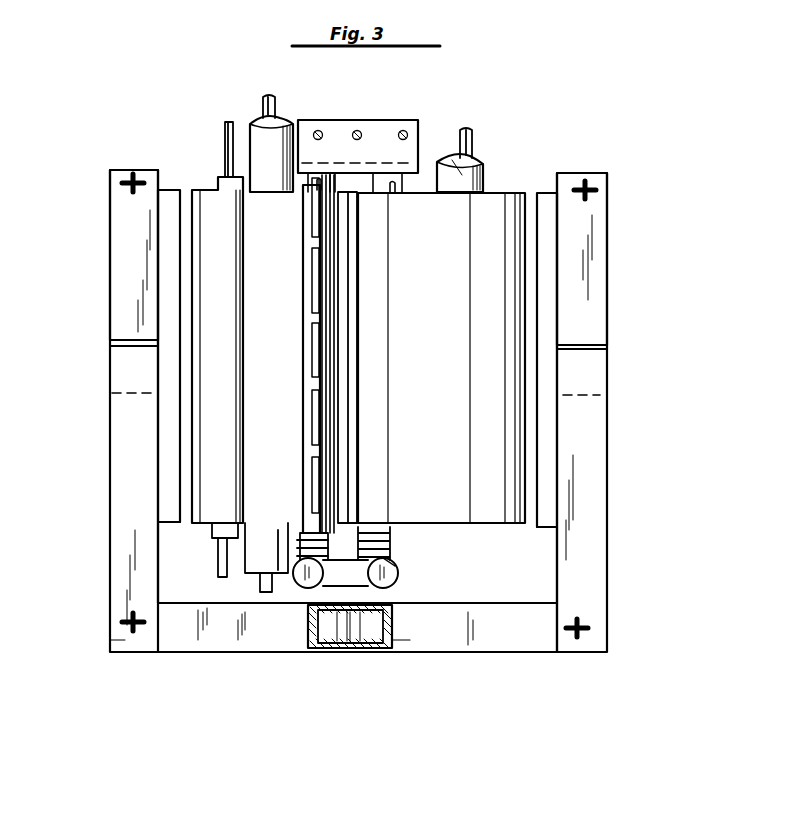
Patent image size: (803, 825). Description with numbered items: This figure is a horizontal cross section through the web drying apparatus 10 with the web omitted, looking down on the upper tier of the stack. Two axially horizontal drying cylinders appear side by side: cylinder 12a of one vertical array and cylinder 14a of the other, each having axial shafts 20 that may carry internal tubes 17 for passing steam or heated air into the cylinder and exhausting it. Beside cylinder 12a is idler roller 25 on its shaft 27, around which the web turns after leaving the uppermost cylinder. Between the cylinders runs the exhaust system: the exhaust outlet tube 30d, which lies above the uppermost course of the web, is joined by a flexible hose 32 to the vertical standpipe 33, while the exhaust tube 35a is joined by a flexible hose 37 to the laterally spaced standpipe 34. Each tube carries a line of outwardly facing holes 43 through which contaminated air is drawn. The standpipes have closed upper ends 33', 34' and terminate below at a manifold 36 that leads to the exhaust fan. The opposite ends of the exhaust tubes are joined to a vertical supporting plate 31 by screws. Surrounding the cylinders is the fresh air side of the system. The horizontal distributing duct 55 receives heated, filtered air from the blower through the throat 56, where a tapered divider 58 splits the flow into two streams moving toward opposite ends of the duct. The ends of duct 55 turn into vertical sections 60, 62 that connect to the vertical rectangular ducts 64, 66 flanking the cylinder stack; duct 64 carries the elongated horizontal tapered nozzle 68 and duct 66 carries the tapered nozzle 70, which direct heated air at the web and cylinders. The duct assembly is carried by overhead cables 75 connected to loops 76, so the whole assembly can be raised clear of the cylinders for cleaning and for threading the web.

The web drying apparatus 10 is at (293, 702).
The cylinder 12a is at (203, 518).
The cylinder 14a is at (505, 210).
The internal tube 17 is at (270, 110).
The axial shaft 20 is at (462, 156).
The idler roller 25 is at (222, 178).
The shaft 27 is at (228, 120).
The exhaust outlet tube 30d is at (312, 448).
The vertical supporting plate 31 is at (372, 160).
The flexible hose 32 is at (300, 530).
The standpipe 33 is at (292, 593).
The closed upper end 33' is at (273, 584).
The standpipe 34 is at (445, 573).
The closed upper end 34' is at (449, 550).
The exhaust tube 35a is at (376, 527).
The manifold 36 is at (347, 575).
The flexible hose 37 is at (392, 545).
The holes 43 is at (312, 410).
The horizontal distributing duct 55 is at (247, 628).
The throat 56 is at (392, 630).
The tapered divider 58 is at (343, 622).
The vertical section 60 is at (122, 340).
The vertical section 62 is at (590, 342).
The vertical rectangular duct 64 is at (125, 283).
The vertical rectangular duct 66 is at (598, 253).
The tapered nozzle 68 is at (167, 233).
The tapered nozzle 70 is at (552, 303).
The cable 75 is at (142, 634).
The loop 76 is at (128, 638).